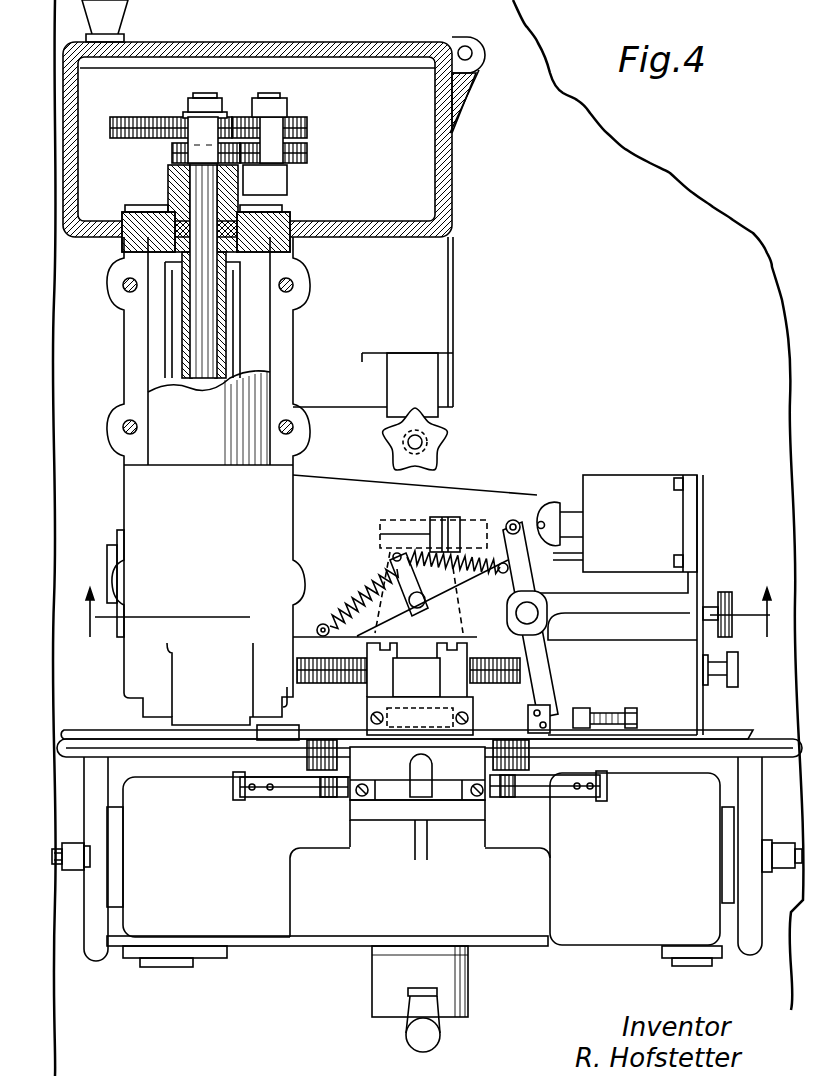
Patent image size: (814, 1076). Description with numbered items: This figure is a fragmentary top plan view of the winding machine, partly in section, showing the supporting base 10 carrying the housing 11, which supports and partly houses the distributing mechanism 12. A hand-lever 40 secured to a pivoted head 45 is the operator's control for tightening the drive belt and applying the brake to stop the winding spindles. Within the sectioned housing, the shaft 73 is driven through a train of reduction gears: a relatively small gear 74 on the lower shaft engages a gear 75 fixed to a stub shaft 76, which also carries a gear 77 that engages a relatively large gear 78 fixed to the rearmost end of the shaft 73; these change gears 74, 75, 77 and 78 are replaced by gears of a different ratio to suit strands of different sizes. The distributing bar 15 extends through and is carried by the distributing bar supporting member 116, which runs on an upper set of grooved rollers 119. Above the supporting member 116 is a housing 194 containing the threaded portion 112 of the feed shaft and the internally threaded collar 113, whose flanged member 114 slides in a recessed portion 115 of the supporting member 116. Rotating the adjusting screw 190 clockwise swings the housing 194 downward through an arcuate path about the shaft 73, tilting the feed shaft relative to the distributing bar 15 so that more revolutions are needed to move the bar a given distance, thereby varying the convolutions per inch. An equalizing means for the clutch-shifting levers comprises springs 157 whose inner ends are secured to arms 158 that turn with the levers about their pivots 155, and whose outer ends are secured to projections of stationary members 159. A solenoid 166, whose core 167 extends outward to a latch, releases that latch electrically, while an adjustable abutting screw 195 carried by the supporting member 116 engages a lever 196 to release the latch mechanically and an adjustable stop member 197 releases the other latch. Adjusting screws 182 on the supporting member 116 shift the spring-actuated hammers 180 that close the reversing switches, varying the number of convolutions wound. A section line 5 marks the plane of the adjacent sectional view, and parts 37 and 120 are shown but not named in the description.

The section line 5- 5 is at (429, 616).
The supporting base 10 is at (775, 770).
The housing 11 is at (247, 918).
The distributing mechanism 12 is at (302, 802).
The distributing bar 15 is at (78, 740).
The clamping bolt 37 is at (790, 855).
The hand-lever 40 is at (420, 1040).
The pivoted head 45 is at (385, 990).
The shaft 73 is at (205, 333).
The relatively small gear 74 is at (175, 150).
The gear 75 is at (308, 160).
The stub shaft 76 is at (280, 97).
The gear 77 is at (308, 128).
The relatively large gear 78 is at (140, 119).
The threaded portion 112 is at (323, 654).
The internally threaded collar 113 is at (455, 675).
The flanged member 114 is at (470, 720).
The recessed portion 115 is at (398, 727).
The distributing bar supporting member 116 is at (452, 790).
The upper set of grooved rollers 119 is at (322, 740).
The slide bracket 120 is at (250, 745).
The pivots 155 is at (410, 548).
The springs 157 is at (407, 553).
The arms 158 is at (392, 560).
The stationary members 159 is at (362, 602).
The solenoid 166 is at (648, 490).
The cores 167 is at (560, 520).
The hammers 180 is at (330, 797).
The adjusting screws 182 is at (233, 787).
The adjusting screw 190 is at (388, 452).
The housing 194 is at (478, 500).
The adjustable abutting screw 195 is at (575, 712).
The lever 196 is at (535, 674).
The adjustable stop member 197 is at (473, 525).